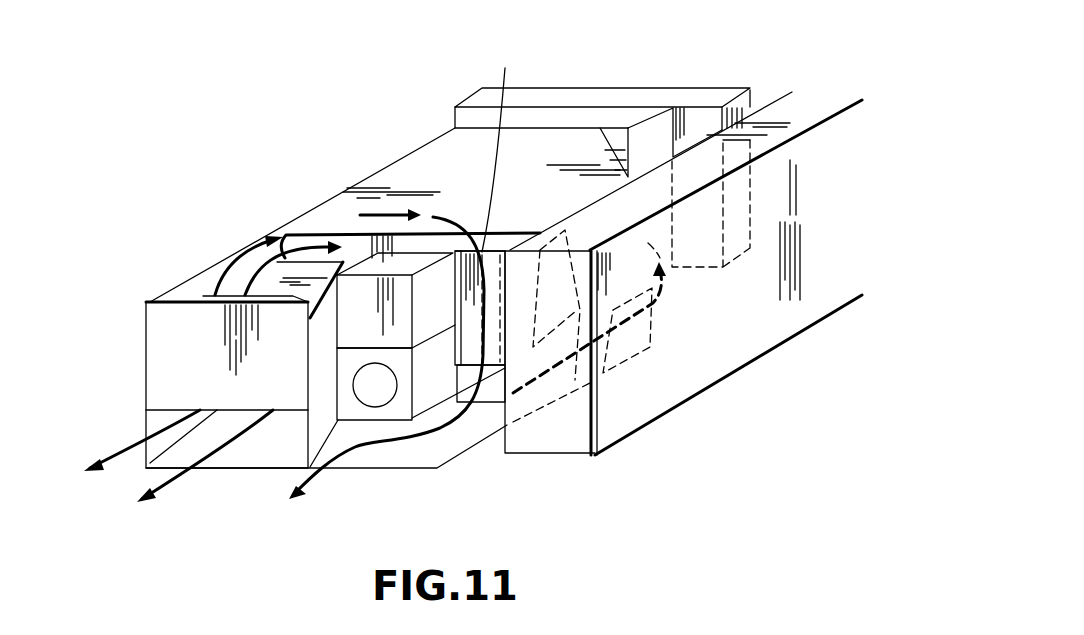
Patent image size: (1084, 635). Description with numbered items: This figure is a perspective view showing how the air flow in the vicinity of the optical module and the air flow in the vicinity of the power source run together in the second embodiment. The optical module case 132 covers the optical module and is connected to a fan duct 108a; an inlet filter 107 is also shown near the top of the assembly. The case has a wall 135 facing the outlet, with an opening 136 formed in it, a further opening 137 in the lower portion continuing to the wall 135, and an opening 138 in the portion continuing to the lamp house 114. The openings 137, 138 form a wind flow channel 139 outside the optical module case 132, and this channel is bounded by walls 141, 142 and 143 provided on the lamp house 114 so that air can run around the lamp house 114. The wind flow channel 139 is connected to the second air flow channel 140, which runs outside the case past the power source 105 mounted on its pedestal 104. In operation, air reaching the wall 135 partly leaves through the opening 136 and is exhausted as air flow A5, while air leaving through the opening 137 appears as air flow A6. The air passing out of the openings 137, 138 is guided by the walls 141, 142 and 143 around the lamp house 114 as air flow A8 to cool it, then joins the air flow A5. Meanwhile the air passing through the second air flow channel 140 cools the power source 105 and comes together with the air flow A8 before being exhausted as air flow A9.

The pedestal 104 is at (670, 289).
The power source 105 is at (717, 372).
The inlet filter 107 is at (707, 97).
The fan duct 108a is at (607, 115).
The lamp house 114 is at (425, 398).
The optical module case 132 is at (393, 175).
The wall 135 is at (173, 335).
The opening 136 is at (270, 448).
The opening 137 is at (207, 296).
The opening 138 is at (515, 252).
The wind flow channel 139 is at (432, 240).
The second air flow channel 140 is at (494, 428).
The wall 141 is at (362, 293).
The wall 142 is at (428, 320).
The wall 143 is at (588, 455).
The air flow A5 is at (143, 480).
The air flow A6 is at (268, 267).
The air flow A8 is at (440, 149).
The air flow A9 is at (313, 456).